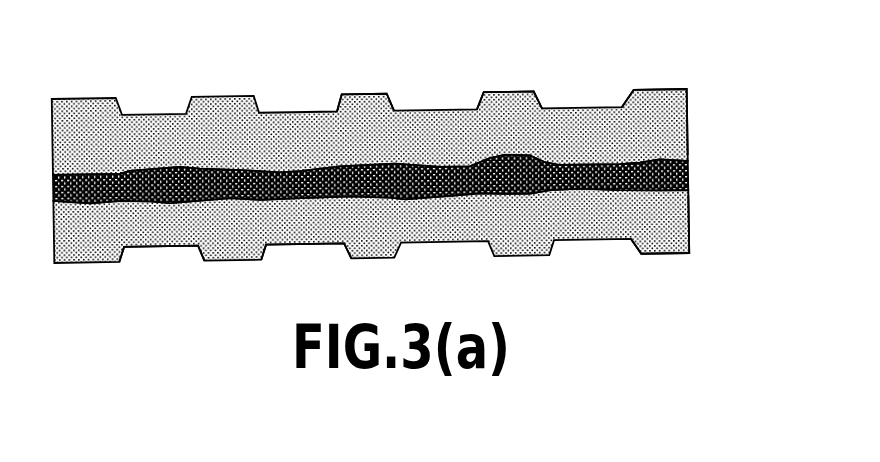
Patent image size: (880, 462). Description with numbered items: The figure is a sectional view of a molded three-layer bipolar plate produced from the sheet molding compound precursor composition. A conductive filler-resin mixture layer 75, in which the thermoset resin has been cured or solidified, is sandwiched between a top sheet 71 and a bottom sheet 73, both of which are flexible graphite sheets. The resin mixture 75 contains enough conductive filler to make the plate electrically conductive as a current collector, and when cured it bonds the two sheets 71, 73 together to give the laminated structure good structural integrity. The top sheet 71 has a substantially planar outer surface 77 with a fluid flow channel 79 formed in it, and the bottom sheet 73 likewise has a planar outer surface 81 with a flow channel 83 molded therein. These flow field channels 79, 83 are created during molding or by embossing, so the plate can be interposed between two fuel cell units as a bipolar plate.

The top sheet 71 is at (672, 136).
The bottom sheet 73 is at (672, 217).
The conductive filler-resin mixture layer 75 is at (688, 176).
The planar outer surface 77 is at (648, 82).
The fluid flow channel 79 is at (435, 108).
The planar outer surface 81 is at (668, 255).
The flow channel 83 is at (307, 250).